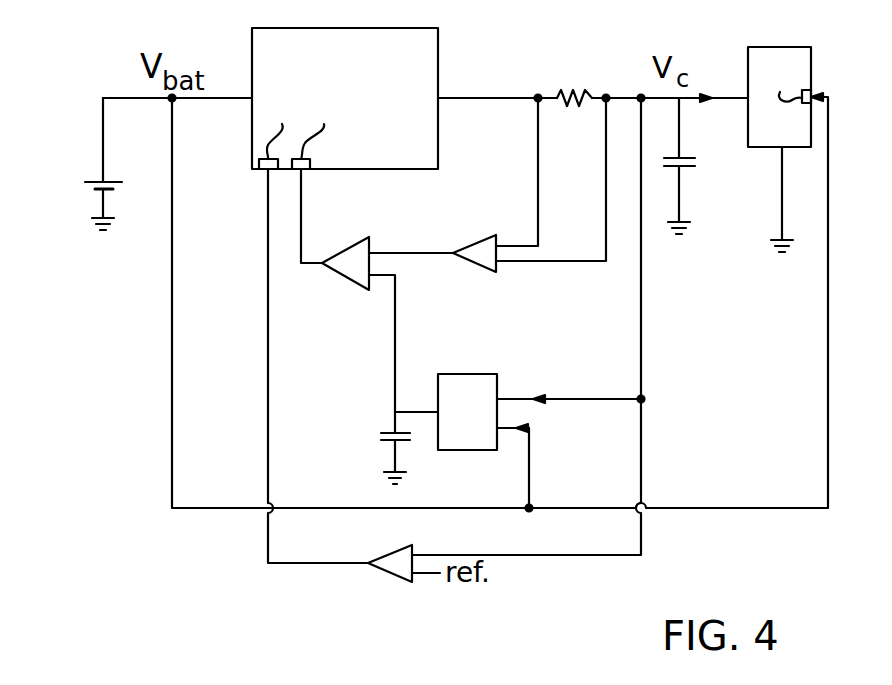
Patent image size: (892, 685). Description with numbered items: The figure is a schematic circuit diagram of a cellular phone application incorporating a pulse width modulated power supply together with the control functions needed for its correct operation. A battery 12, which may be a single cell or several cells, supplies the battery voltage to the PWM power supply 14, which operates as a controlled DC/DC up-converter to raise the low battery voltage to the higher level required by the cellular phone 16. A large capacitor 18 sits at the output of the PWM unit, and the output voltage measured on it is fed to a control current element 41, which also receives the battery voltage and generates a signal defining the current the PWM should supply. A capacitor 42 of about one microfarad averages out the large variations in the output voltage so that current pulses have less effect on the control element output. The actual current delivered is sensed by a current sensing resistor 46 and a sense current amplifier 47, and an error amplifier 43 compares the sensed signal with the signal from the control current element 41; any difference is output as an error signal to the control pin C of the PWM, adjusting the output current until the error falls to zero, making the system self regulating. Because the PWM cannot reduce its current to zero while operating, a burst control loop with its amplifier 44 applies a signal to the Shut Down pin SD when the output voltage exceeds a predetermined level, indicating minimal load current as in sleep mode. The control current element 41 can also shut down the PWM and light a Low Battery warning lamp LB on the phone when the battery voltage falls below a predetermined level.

The battery 12 is at (95, 186).
The pulse width modulated (PWM) power supply 14 is at (438, 52).
The cellular phone 16 is at (767, 147).
The capacitor 18 is at (686, 168).
The control current element 41 is at (466, 374).
The capacitor 42 is at (380, 436).
The error amplifier 43 is at (342, 241).
The amplifier 44 is at (392, 574).
The current sensing resistor 46 is at (580, 92).
The sense current amplifier 47 is at (472, 238).